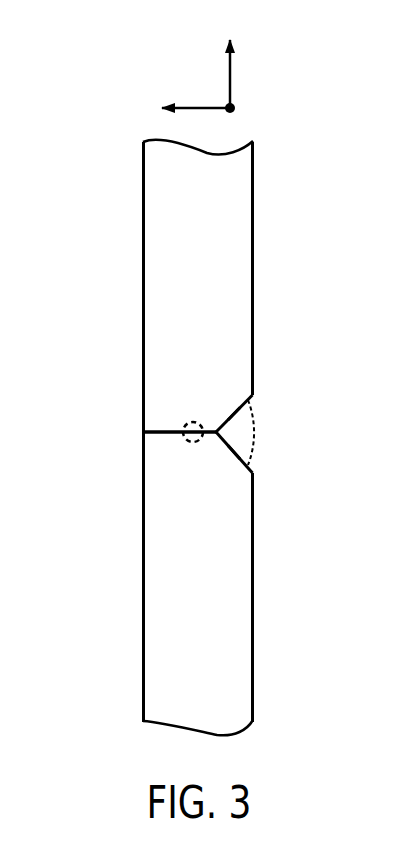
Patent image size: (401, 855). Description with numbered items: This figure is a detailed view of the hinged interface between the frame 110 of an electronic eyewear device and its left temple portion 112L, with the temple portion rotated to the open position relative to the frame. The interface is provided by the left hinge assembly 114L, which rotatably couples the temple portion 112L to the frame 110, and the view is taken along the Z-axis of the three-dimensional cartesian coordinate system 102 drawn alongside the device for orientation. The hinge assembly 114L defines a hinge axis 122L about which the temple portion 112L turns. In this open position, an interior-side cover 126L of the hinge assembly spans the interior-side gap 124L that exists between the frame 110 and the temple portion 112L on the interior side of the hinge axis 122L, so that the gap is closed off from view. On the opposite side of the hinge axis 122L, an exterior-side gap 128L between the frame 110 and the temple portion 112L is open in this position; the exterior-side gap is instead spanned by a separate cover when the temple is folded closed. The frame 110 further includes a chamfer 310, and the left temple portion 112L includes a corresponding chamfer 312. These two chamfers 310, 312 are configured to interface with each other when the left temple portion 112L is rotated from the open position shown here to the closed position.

The three-dimensional cartesian coordinate system 102 is at (199, 74).
The frame 110 is at (230, 325).
The left temple portion 112L is at (233, 547).
The left hinge assembly 114L is at (273, 400).
The interior-side gap 124L is at (260, 452).
The interior-side cover 126L is at (243, 435).
The exterior-side gap 128L is at (138, 433).
The hinge axis 122L is at (186, 426).
The chamfer 310 is at (230, 410).
The corresponding chamfer 312 is at (233, 452).